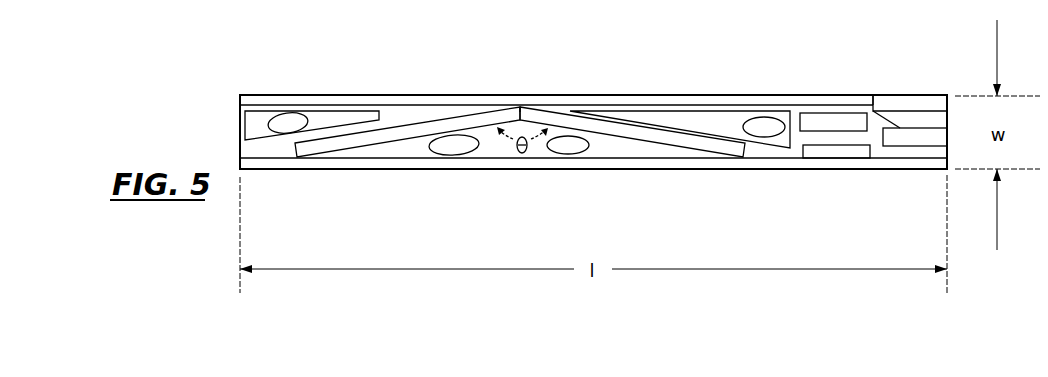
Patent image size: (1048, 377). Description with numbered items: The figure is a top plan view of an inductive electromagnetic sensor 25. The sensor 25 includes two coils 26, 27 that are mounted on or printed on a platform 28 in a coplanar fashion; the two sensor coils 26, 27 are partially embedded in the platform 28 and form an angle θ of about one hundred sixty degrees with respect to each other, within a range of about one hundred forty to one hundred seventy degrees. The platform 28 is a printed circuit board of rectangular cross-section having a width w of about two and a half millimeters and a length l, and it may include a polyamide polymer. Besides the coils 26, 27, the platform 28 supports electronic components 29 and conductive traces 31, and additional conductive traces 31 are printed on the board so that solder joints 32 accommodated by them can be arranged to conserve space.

The sensor 25 is at (534, 72).
The coil 26 is at (412, 130).
The coil 27 is at (647, 128).
The platform 28 is at (740, 90).
The electronic components 29 is at (833, 120).
The conductive traces 31 is at (262, 122).
The solder joints 32 is at (292, 121).